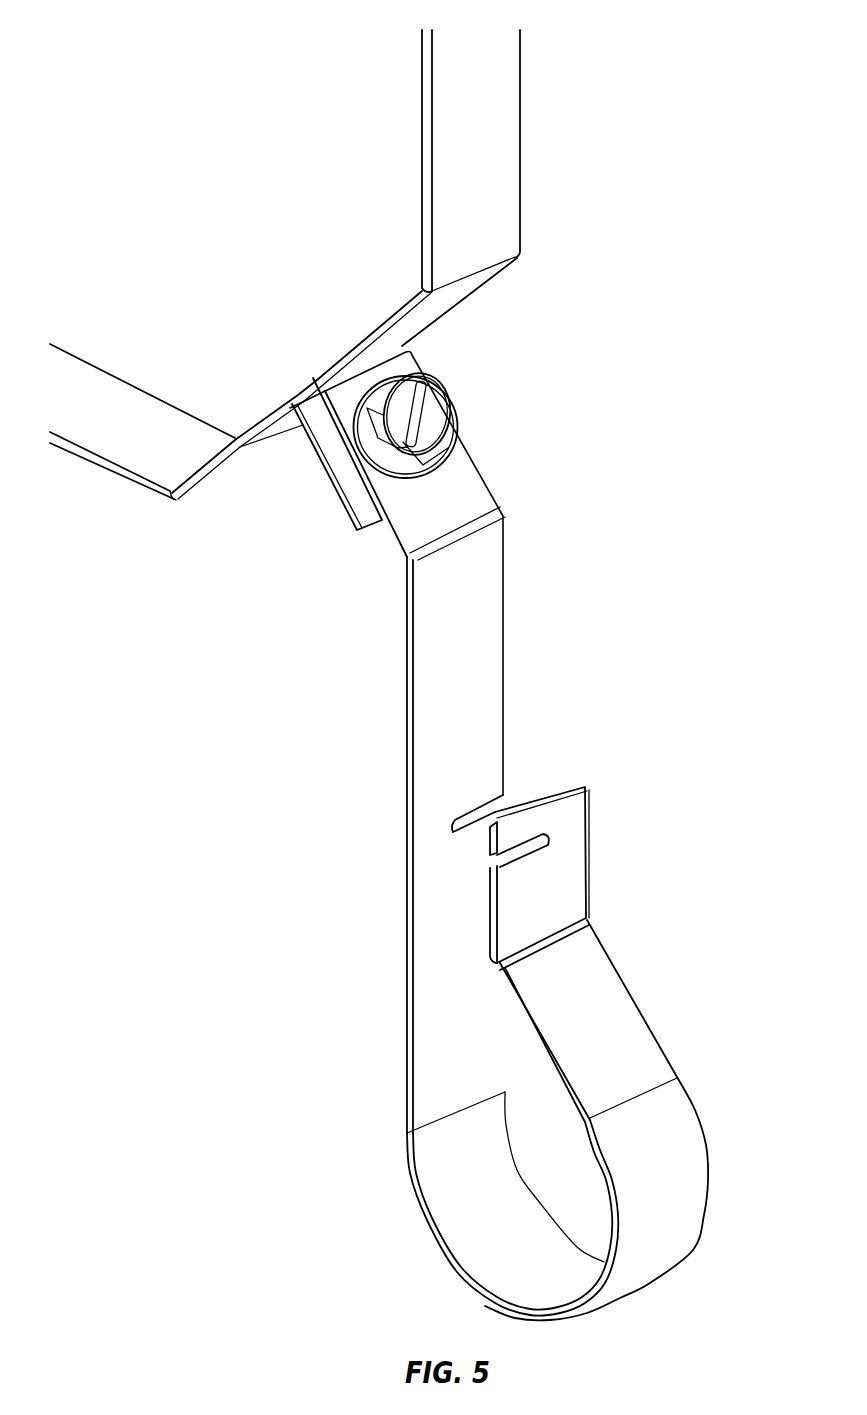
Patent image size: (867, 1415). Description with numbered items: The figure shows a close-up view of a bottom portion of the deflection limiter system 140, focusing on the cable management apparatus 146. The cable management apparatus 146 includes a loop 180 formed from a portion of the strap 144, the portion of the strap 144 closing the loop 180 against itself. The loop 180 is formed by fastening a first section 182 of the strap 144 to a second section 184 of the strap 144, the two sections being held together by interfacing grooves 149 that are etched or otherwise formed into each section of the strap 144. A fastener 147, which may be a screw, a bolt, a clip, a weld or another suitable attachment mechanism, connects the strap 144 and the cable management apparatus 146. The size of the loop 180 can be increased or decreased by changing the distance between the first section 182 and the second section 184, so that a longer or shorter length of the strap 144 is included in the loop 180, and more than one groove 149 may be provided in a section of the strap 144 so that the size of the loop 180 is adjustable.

The deflection limiter system 140 is at (113, 50).
The strap 144 is at (500, 188).
The cable management apparatus 146 is at (540, 835).
The fastener 147 is at (440, 422).
The groove 149 is at (547, 843).
The loop 180 is at (725, 940).
The first section 182 is at (577, 878).
The second section 184 is at (410, 860).